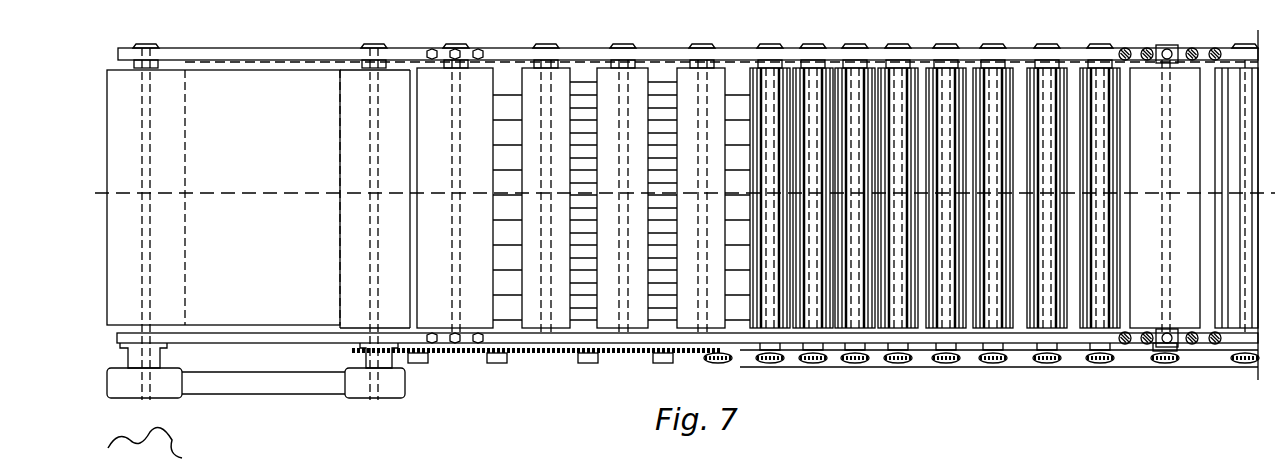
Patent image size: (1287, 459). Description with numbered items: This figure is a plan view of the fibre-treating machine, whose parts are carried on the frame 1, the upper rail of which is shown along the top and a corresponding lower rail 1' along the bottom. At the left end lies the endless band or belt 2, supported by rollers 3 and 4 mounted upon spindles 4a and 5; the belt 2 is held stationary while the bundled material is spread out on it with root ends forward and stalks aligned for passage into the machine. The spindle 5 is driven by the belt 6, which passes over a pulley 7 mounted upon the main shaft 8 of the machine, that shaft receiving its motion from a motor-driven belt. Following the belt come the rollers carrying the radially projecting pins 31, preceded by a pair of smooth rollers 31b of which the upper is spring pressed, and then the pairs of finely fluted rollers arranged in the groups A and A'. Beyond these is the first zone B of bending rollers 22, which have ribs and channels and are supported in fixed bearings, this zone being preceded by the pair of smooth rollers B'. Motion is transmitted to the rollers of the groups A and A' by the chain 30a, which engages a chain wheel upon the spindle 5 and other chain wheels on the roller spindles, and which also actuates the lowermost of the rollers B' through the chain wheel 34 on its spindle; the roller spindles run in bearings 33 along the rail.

The frame 1 is at (688, 203).
The lower frame rail 1' is at (687, 347).
The endless band or belt 2 is at (223, 197).
The roller 3 is at (162, 63).
The roller 4 is at (352, 63).
The spindle 4a is at (150, 118).
The spindle 5 is at (372, 118).
The belt 6 is at (281, 390).
The pulley 7 is at (163, 398).
The main shaft 8 is at (1273, 200).
The bending rollers 22 is at (1232, 318).
The chain 30a is at (896, 362).
The pins 31 is at (515, 297).
The smooth rollers 31b is at (455, 196).
The bearing 33 is at (790, 362).
The chain wheel 34 is at (1165, 366).
The group of rollers A is at (834, 166).
The group of rollers A' is at (1021, 166).
The zone of bending rollers B is at (1235, 172).
The smooth rollers B' is at (1165, 196).